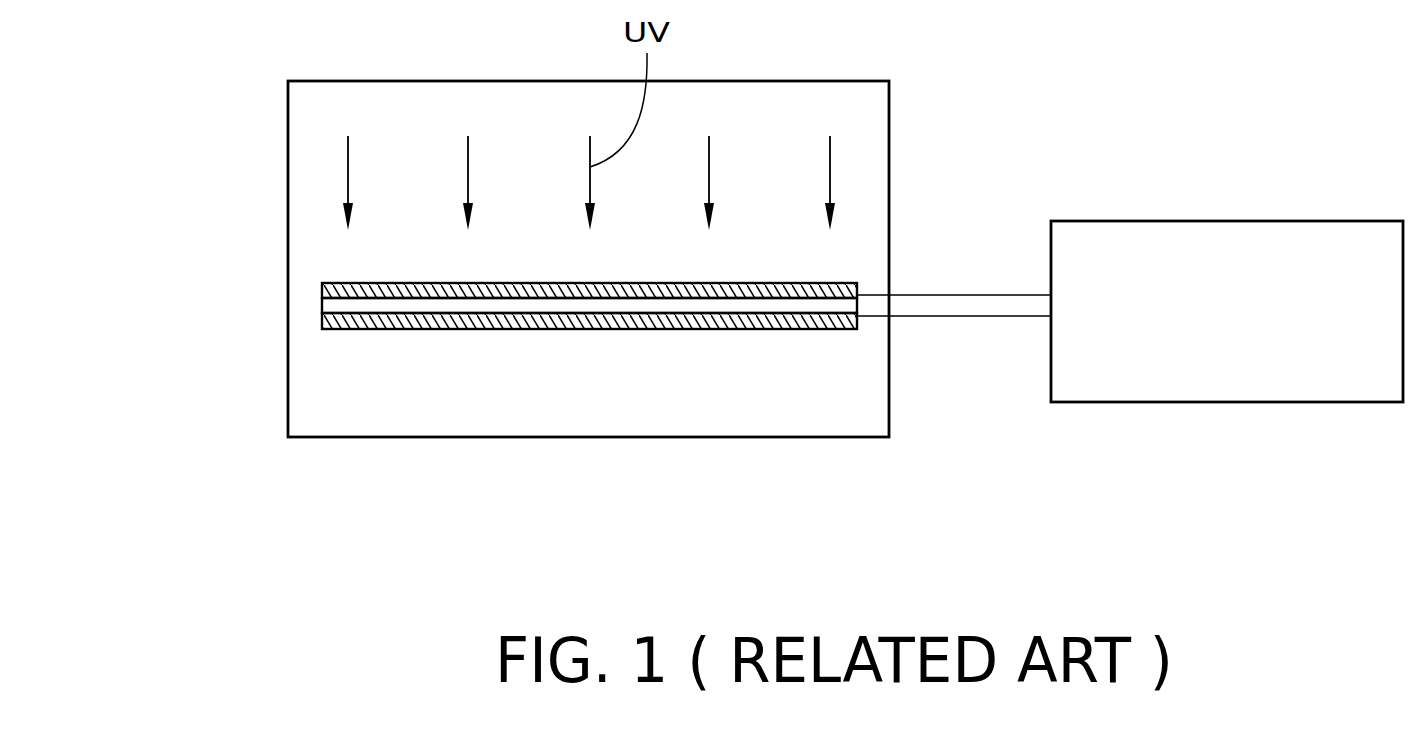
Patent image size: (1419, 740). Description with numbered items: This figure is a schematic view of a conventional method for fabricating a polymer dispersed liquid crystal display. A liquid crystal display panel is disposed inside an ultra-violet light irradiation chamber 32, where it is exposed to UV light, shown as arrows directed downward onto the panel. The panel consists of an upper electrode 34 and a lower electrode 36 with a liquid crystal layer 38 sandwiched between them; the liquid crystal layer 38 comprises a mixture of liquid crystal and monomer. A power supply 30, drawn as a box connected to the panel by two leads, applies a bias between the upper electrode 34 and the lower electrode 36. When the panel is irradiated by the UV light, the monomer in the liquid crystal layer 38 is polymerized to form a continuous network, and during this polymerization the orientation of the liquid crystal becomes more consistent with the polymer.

The power supply 30 is at (1229, 221).
The ultra-violet light irradiation chamber 32 is at (288, 125).
The upper electrode 34 is at (340, 283).
The lower electrode 36 is at (340, 330).
The liquid crystal layer 38 is at (323, 303).